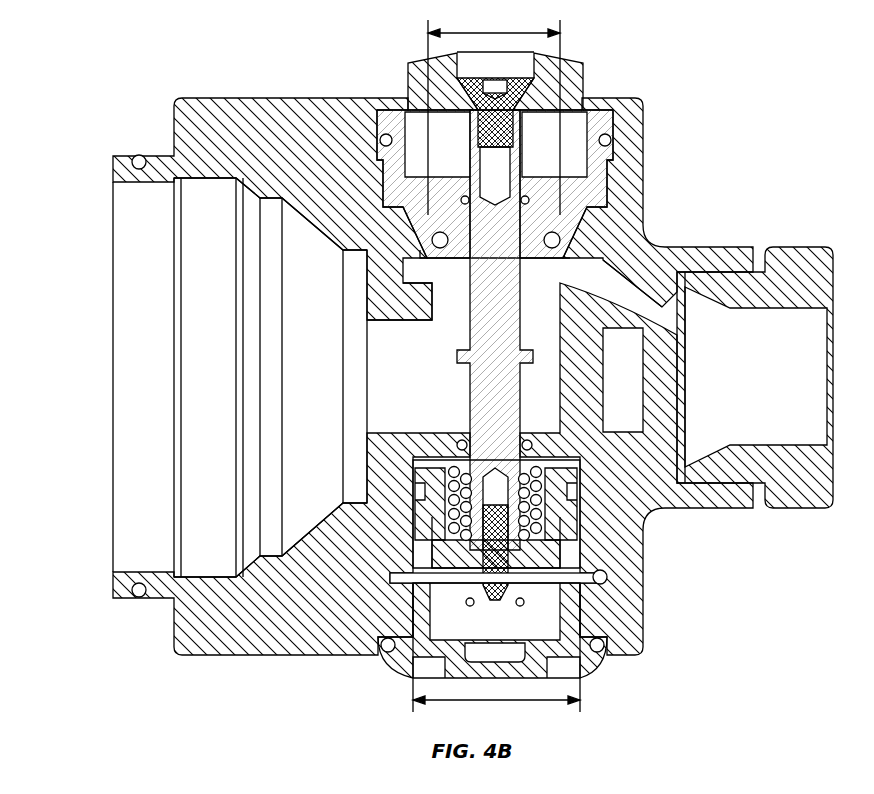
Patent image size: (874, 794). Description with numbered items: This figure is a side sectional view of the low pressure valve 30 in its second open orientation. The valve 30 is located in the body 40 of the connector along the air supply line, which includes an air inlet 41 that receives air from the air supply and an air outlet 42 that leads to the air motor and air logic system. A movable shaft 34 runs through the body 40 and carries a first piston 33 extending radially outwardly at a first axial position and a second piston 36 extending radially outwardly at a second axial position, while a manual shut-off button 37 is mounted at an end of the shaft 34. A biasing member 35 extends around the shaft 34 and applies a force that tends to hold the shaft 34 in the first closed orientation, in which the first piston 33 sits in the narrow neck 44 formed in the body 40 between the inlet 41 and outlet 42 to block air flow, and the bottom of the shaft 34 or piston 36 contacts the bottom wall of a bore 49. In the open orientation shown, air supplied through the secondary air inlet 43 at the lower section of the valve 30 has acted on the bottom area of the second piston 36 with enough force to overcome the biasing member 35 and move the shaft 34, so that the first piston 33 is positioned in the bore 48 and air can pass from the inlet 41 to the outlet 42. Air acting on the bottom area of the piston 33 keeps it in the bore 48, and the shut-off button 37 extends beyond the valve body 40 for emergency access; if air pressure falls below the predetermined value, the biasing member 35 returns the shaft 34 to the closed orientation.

The valve 30 is at (406, 43).
The first piston 33 is at (510, 242).
The shaft 34 is at (494, 302).
The biasing member 35 is at (552, 500).
The second piston 36 is at (568, 525).
The manual shut-off button 37 is at (572, 80).
The body 40 is at (280, 127).
The air inlet 41 is at (617, 285).
The air outlet 42 is at (405, 373).
The secondary air inlet 43 is at (606, 581).
The neck 44 is at (430, 312).
The bore 48 is at (423, 243).
The bore 49 is at (455, 542).